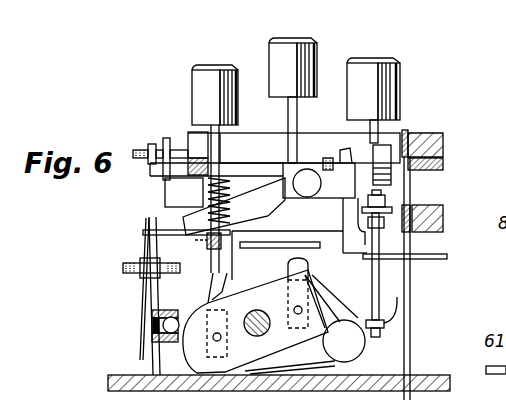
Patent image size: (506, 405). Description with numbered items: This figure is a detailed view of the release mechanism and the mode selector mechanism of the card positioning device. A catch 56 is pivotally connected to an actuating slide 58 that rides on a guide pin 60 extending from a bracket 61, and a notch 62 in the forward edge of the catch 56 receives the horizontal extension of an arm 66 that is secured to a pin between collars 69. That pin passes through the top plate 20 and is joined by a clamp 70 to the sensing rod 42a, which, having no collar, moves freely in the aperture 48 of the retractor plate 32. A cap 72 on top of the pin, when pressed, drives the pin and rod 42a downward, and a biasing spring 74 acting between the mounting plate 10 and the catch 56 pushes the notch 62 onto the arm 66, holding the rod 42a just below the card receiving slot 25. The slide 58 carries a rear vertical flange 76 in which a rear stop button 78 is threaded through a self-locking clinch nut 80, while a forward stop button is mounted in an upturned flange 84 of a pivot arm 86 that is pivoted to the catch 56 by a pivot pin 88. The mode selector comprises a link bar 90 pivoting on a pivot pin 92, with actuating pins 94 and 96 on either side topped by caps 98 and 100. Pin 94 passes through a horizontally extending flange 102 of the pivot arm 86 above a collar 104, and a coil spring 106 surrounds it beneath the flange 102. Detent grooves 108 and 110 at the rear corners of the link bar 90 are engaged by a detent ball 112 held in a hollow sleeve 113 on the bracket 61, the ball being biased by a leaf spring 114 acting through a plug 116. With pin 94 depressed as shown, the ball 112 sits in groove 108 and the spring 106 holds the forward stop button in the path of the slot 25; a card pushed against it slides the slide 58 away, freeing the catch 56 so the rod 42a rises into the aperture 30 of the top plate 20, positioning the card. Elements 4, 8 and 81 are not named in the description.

The cross bar 4 is at (368, 259).
The vertical rod 8 is at (379, 297).
The mounting plate 10 is at (116, 375).
The top plate 20 is at (443, 141).
The card receiving slot 25 is at (275, 154).
The aperture 30 is at (407, 134).
The retractor plate 32 is at (444, 218).
The sensing rod 42a is at (411, 289).
The aperture 48 is at (419, 209).
The catch 56 is at (294, 250).
The actuating slide 58 is at (165, 192).
The guide pin 60 is at (186, 223).
The bracket 61 is at (140, 242).
The notch 62 is at (341, 259).
The arm 66 is at (352, 242).
The collars 69 is at (388, 194).
The clamp 70 is at (393, 336).
The cap 72 is at (401, 70).
The biasing spring 74 is at (334, 310).
The rear vertical flange 76 is at (167, 138).
The rear stop button 78 is at (209, 148).
The self-locking clinch nut 80 is at (153, 144).
The pin 81 is at (327, 159).
The upturned flange 84 is at (354, 157).
The pivot arm 86 is at (263, 195).
The pivot pin 88 is at (321, 184).
The link bar 90 is at (290, 347).
The pivot pin 92 is at (263, 302).
The actuating pin 94 is at (223, 294).
The actuating pin 96 is at (292, 272).
The cap 98 is at (214, 68).
The cap 100 is at (293, 93).
The horizontally extending flange 102 is at (240, 209).
The collar 104 is at (207, 244).
The coil spring 106 is at (210, 191).
The detent groove 108 is at (178, 320).
The detent groove 110 is at (195, 374).
The detent ball 112 is at (180, 325).
The hollow sleeve 113 is at (168, 308).
The leaf spring 114 is at (150, 316).
The plug 116 is at (150, 334).